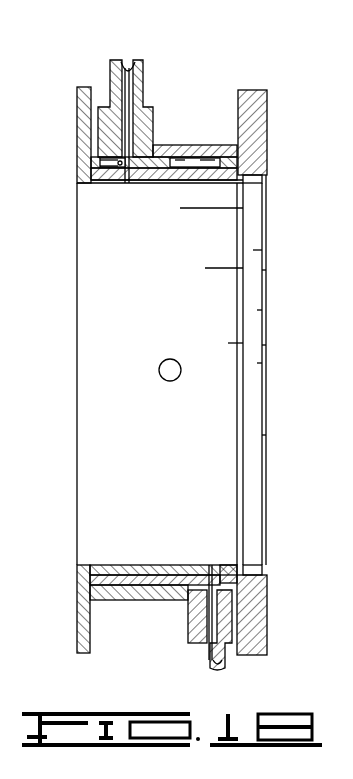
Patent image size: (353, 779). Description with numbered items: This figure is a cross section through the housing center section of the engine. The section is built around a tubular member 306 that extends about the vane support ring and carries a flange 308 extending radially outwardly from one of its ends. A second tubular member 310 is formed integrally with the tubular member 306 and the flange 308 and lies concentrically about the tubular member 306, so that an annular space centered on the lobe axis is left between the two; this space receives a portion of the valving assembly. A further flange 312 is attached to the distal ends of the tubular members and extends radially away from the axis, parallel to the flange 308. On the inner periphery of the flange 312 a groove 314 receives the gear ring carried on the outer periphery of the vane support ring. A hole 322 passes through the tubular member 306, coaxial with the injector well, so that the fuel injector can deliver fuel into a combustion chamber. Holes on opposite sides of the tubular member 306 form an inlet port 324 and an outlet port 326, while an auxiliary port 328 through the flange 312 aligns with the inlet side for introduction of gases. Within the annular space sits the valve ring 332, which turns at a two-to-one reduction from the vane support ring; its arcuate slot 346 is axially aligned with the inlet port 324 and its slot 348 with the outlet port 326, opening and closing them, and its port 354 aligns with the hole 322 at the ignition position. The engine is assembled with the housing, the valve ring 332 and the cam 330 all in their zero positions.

The tubular member 306 is at (262, 200).
The flange 308 is at (79, 120).
The second tubular member 310 is at (165, 147).
The flange 312 is at (258, 116).
The groove 314 is at (262, 411).
The hole 322 is at (166, 380).
The inlet port 324 is at (125, 183).
The outlet port 326 is at (213, 570).
The auxiliary port 328 is at (128, 64).
The cam 330 is at (222, 665).
The valve ring 332 is at (222, 147).
The slot 346 is at (98, 163).
The slot 348 is at (238, 589).
The port 354 is at (187, 150).